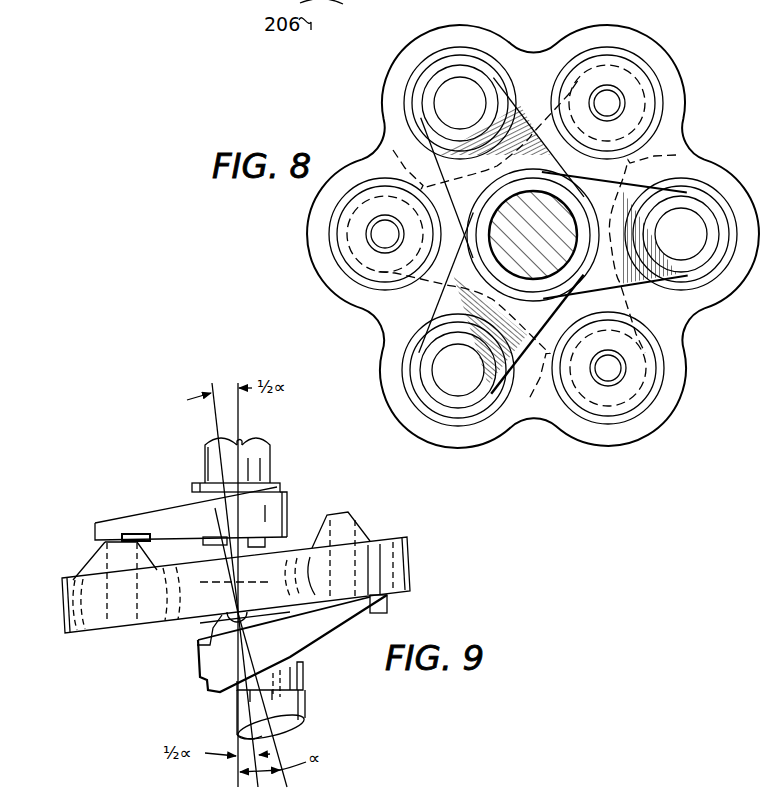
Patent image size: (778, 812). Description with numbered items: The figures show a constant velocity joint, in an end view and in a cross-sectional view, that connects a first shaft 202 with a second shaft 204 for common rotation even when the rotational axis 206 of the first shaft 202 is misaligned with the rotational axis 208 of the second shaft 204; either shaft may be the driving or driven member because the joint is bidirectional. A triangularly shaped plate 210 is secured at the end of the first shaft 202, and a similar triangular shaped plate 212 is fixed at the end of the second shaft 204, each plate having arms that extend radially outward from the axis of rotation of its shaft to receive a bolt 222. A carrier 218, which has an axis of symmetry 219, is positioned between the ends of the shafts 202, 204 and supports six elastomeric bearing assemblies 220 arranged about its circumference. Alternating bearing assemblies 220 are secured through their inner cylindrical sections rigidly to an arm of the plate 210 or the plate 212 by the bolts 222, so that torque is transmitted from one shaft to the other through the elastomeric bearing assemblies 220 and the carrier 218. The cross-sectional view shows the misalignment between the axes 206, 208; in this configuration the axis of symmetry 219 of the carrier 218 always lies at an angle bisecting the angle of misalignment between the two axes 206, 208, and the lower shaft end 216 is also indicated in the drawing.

In FIG. 9, the first shaft 202 is at (304, 690).
In FIG. 8, the second shaft 204 is at (566, 216).
In FIG. 9, the second shaft 204 is at (273, 478).
In FIG. 9, the rotational axis of the first shaft 206 is at (286, 740).
In FIG. 9, the rotational axis of the second shaft 208 is at (240, 440).
In FIG. 8, the triangularly shaped plate 210 is at (391, 147).
In FIG. 8, the triangular shaped plate 212 is at (502, 393).
In FIG. 9, the lower shaft end 216 is at (236, 733).
In FIG. 8, the carrier 218 is at (670, 41).
In FIG. 9, the carrier 218 is at (413, 567).
In FIG. 9, the axis of symmetry 219 is at (212, 427).
In FIG. 8, the elastomeric bearing assemblies 220 is at (580, 66).
In FIG. 9, the elastomeric bearing assemblies 220 is at (92, 565).
In FIG. 8, the bolt 222 is at (380, 233).